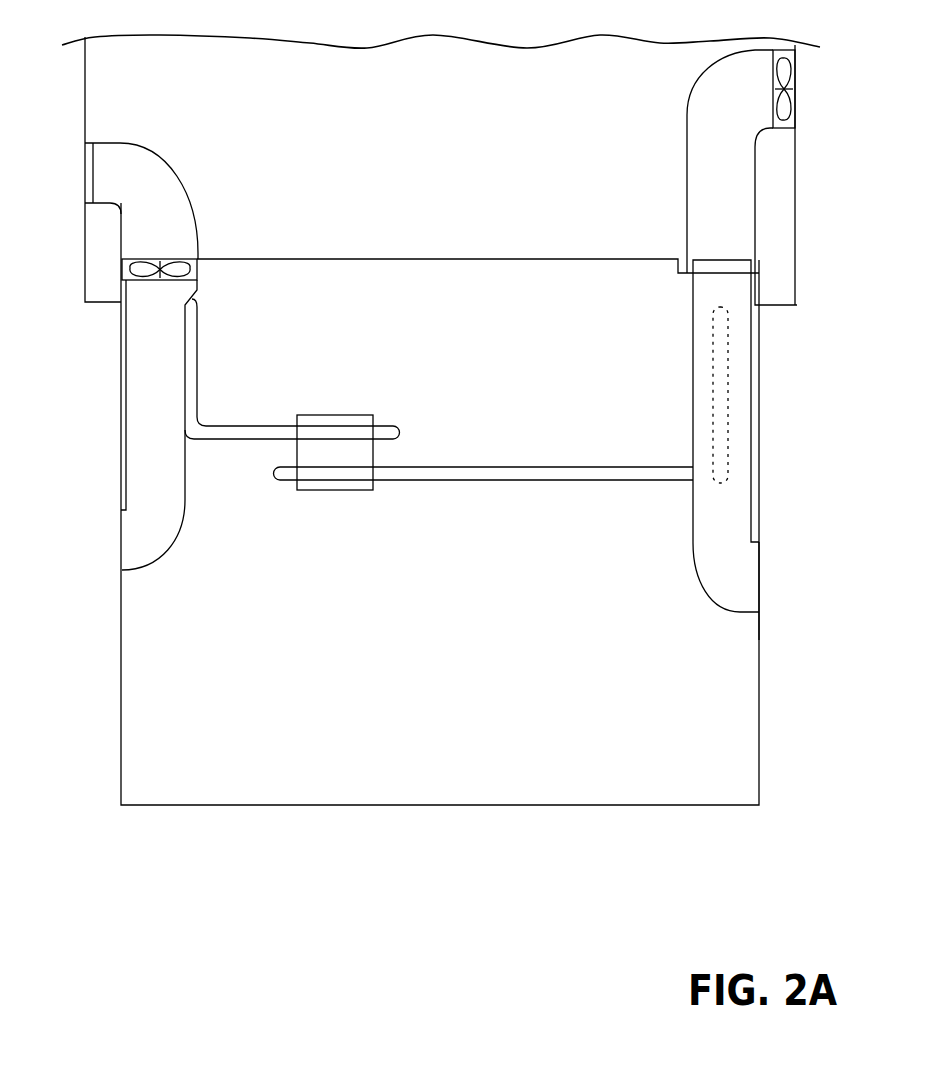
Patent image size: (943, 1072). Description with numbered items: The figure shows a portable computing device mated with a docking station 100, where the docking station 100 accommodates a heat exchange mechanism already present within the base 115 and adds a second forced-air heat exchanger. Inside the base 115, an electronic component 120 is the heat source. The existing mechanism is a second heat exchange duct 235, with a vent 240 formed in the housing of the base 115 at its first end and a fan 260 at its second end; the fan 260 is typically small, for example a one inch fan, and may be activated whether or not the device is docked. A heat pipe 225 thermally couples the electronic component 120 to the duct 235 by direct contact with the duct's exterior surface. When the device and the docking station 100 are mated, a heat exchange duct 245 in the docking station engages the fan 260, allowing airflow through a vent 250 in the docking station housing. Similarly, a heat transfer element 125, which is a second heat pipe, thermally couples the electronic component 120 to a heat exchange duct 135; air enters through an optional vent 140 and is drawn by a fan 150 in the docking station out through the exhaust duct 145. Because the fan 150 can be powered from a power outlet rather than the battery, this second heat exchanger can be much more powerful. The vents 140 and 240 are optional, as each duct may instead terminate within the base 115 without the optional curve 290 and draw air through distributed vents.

The docking station 100 is at (448, 165).
The base 115 is at (449, 797).
The electronic component 120 is at (360, 412).
The heat transfer element 125 is at (490, 462).
The heat exchange duct 135 is at (760, 367).
The vent 140 is at (770, 592).
The exhaust duct 145 is at (738, 192).
The fan 150 is at (808, 77).
The heat pipe 225 is at (243, 422).
The second heat exchange duct 235 is at (171, 397).
The vent 240 is at (120, 543).
The heat exchange duct 245 is at (164, 207).
The vent 250 is at (78, 172).
The fan 260 is at (205, 270).
The curve 290 is at (705, 600).